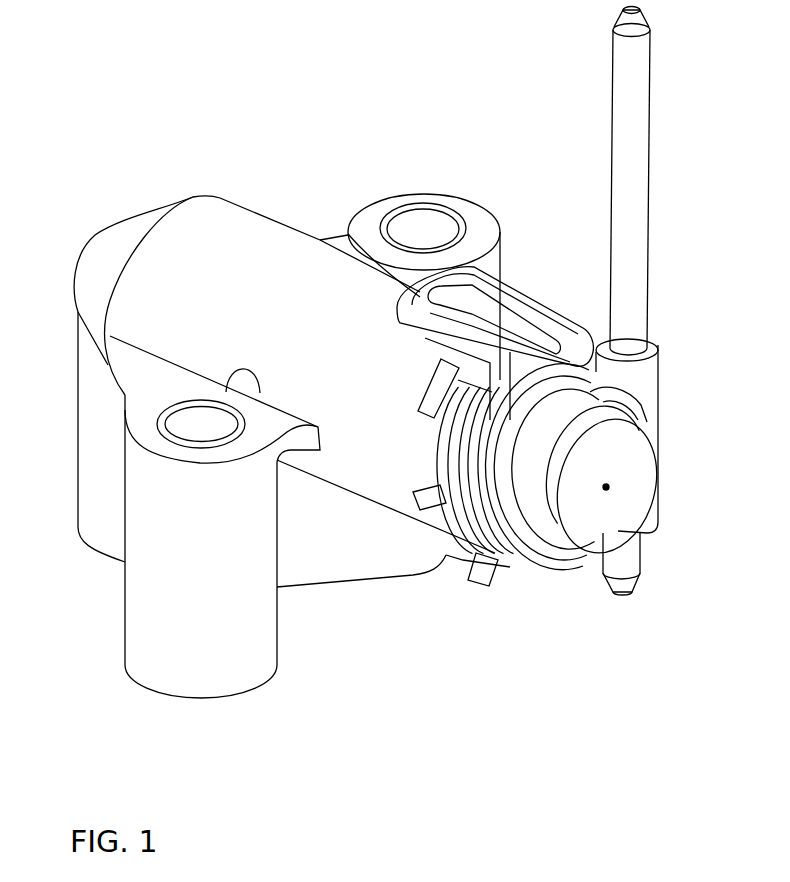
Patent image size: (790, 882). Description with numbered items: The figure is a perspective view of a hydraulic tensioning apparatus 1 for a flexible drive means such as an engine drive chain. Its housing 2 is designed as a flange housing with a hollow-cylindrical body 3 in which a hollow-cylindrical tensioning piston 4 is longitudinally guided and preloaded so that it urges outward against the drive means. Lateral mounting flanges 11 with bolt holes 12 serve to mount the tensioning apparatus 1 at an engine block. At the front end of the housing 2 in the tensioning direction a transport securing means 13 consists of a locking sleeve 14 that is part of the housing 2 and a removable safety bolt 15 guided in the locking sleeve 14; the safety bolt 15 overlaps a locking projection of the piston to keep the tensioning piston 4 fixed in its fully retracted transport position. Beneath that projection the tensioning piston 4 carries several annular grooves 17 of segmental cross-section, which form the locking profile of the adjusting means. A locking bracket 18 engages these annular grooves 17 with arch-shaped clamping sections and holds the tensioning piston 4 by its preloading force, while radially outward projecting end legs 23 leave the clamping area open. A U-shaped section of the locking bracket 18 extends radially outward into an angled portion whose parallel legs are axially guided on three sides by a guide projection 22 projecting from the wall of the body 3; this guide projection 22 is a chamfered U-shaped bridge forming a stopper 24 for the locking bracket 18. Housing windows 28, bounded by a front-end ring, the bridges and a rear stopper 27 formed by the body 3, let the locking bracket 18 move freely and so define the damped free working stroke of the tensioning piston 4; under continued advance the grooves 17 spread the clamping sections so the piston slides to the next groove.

The tensioning apparatus 1 is at (76, 204).
The housing 2 is at (95, 305).
The hollow-cylindrical body 3 is at (178, 232).
The tensioning piston 4 is at (580, 537).
The mounting flange 11 is at (130, 633).
The bolt hole 12 is at (193, 427).
The transport securing means 13 is at (656, 322).
The locking sleeve 14 is at (657, 395).
The safety bolt 15 is at (620, 182).
The annular grooves 17 is at (413, 503).
The locking bracket 18 is at (507, 348).
The guide projection 22 is at (517, 300).
The end legs 23 is at (488, 578).
The stopper 24 is at (497, 380).
The rear stopper 27 is at (413, 495).
The housing windows 28 is at (445, 515).